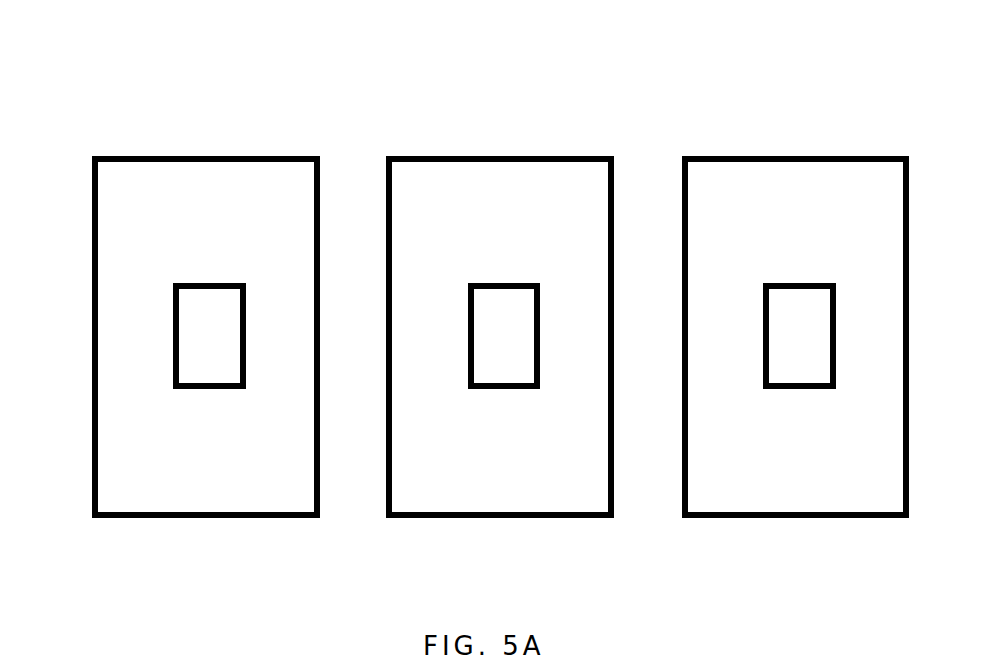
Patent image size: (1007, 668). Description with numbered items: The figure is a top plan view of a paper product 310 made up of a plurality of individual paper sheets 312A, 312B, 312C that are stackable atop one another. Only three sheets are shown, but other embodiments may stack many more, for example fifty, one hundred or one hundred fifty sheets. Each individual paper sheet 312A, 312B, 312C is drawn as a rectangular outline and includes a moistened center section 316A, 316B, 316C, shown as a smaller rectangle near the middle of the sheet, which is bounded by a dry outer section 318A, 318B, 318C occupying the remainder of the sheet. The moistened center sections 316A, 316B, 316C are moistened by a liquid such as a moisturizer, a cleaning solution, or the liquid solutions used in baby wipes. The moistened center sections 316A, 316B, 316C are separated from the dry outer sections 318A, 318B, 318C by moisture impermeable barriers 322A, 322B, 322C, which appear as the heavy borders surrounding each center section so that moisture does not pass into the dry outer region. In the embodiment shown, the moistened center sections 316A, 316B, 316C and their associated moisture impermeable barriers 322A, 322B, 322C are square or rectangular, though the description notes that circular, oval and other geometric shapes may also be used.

The paper product 310 is at (110, 113).
The individual paper sheet 312A is at (209, 518).
The individual paper sheet 312B is at (492, 518).
The individual paper sheet 312C is at (790, 518).
The moistened center section 316A is at (207, 337).
The moistened center section 316B is at (501, 335).
The moistened center section 316C is at (797, 333).
The dry outer section 318A is at (244, 471).
The dry outer section 318B is at (525, 463).
The dry outer section 318C is at (838, 460).
The moisture impermeable barrier 322A is at (226, 286).
The moisture impermeable barrier 322B is at (515, 283).
The moisture impermeable barrier 322C is at (812, 283).